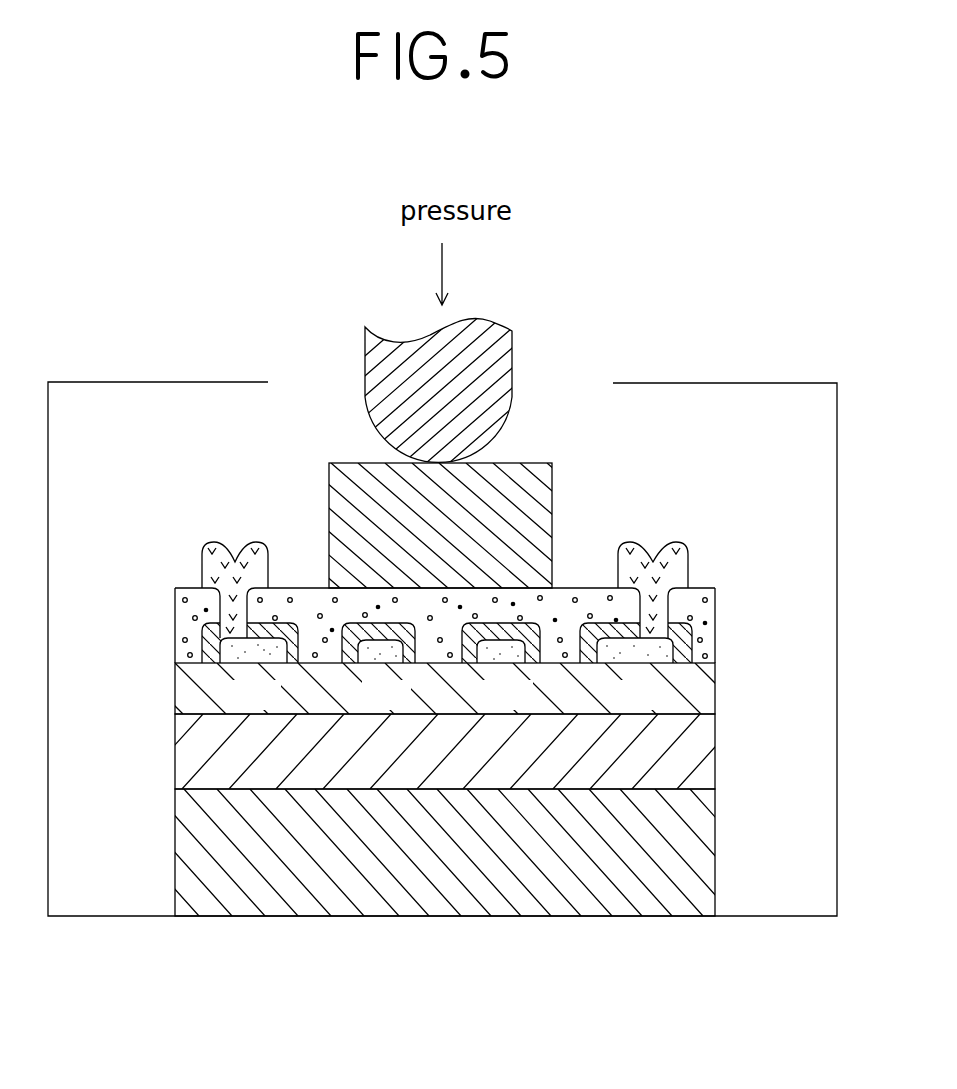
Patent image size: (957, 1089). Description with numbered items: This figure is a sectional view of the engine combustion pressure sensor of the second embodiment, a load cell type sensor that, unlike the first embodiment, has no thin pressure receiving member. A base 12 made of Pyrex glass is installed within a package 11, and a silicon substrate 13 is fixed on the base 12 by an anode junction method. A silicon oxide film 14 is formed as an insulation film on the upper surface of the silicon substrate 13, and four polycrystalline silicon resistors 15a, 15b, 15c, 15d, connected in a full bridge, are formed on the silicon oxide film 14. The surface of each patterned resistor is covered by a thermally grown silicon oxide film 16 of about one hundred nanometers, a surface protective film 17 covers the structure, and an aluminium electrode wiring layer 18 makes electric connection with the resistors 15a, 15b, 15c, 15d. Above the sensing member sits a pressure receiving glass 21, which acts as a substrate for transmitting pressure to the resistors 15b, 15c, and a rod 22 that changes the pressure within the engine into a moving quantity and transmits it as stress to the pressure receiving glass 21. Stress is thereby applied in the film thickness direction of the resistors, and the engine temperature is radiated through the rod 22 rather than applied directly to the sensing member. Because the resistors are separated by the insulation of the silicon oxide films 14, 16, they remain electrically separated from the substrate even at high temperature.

The package 11 is at (838, 756).
The base 12 is at (710, 837).
The silicon substrate 13 is at (707, 748).
The silicon oxide film 14 is at (711, 686).
The polycrystalline silicon resistor 15a is at (250, 655).
The polycrystalline silicon resistor 15b is at (381, 655).
The polycrystalline silicon resistor 15c is at (503, 655).
The polycrystalline silicon resistor 15d is at (630, 658).
The silicon oxide film 16 is at (352, 637).
The surface protective film 17 is at (390, 608).
The aluminium electrode wiring layer 18 is at (250, 558).
The pressure receiving glass 21 is at (538, 476).
The rod 22 is at (507, 358).